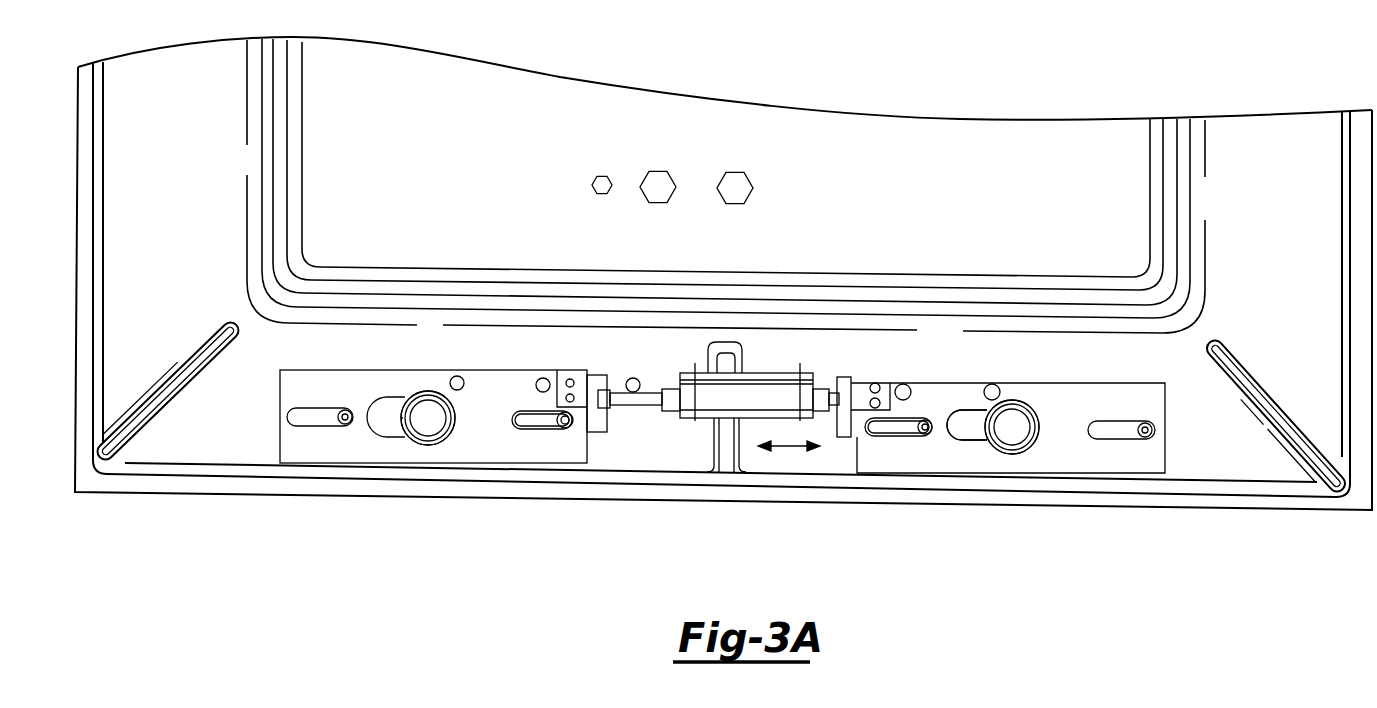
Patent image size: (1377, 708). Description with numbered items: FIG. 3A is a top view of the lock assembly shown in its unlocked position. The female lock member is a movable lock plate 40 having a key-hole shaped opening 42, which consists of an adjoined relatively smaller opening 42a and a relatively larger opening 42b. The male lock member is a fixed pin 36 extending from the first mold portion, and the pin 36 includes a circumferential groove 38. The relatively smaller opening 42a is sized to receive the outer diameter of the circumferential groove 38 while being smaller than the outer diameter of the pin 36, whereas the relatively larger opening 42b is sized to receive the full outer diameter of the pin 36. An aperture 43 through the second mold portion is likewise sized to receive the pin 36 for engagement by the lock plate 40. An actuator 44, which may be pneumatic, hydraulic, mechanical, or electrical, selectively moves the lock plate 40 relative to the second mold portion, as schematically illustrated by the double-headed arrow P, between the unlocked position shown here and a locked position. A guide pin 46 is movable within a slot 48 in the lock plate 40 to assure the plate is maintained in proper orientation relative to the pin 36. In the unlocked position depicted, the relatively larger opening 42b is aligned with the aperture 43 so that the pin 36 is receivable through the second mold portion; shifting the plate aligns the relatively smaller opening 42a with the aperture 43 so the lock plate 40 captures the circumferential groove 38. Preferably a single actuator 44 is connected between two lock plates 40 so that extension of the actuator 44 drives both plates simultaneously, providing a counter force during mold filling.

The pin 36 is at (434, 434).
The circumferential groove 38 is at (457, 416).
The lock plate 40 is at (547, 448).
The key-hole shaped opening 42 is at (388, 386).
The relatively smaller opening 42a is at (966, 434).
The relatively larger opening 42b is at (1032, 407).
The aperture 43 is at (403, 418).
The actuator 44 is at (709, 400).
The guide pin 46 is at (343, 428).
The slot 48 is at (295, 428).
The double-headed arrow P is at (790, 448).